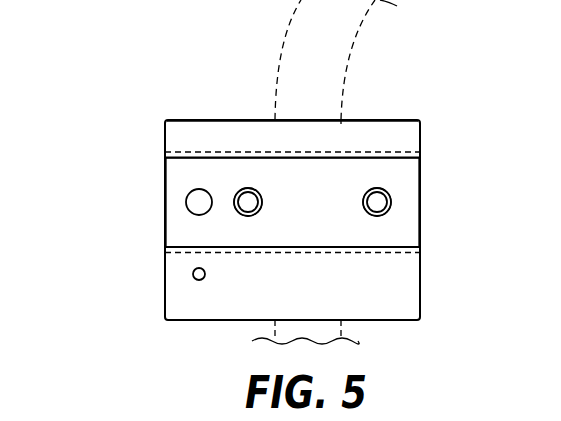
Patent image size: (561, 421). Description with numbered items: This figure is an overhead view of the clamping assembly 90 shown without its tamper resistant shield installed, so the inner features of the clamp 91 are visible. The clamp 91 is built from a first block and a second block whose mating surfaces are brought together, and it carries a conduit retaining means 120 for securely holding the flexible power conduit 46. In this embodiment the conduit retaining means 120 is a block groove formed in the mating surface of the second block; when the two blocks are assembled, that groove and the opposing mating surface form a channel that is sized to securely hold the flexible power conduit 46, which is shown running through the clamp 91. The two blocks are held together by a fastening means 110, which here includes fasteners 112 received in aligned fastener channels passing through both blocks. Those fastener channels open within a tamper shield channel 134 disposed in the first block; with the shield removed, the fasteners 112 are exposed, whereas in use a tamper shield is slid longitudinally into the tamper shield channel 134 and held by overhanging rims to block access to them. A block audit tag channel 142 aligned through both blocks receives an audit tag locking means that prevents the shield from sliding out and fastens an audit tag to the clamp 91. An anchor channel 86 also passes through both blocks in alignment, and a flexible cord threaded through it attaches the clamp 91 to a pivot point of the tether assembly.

The clamping assembly 90 is at (195, 55).
The clamp 91 is at (178, 132).
The flexible power conduit 46 is at (330, 57).
The conduit retaining means 120 is at (328, 118).
The tamper shield channel 134 is at (363, 173).
The fasteners 112 is at (238, 190).
The fastening means 110 is at (312, 202).
The block audit tag channel 142 is at (187, 205).
The anchor channel 86 is at (193, 280).